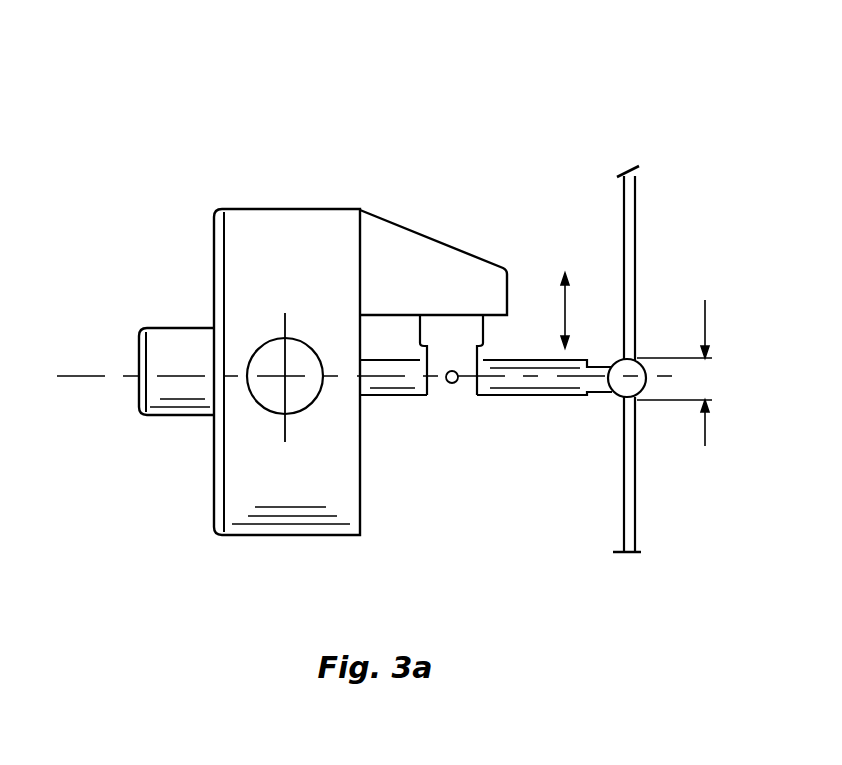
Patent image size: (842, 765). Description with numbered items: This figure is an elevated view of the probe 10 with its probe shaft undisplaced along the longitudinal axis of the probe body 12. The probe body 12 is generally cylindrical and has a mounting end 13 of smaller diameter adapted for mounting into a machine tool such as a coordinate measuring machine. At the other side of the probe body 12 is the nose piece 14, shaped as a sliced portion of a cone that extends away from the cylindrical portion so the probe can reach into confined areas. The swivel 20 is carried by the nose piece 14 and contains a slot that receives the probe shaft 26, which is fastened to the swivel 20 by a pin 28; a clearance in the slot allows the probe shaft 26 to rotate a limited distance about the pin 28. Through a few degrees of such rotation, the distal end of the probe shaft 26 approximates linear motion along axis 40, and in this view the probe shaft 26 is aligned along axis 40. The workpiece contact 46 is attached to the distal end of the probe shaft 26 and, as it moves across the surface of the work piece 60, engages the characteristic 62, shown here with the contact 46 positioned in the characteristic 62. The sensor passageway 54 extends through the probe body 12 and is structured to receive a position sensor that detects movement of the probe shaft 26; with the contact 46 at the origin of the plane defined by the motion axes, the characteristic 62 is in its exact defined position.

The probe 10 is at (602, 65).
The probe body 12 is at (264, 209).
The mounting end 13 is at (170, 328).
The nose piece 14 is at (391, 222).
The swivel 20 is at (485, 331).
The probe shaft 26 is at (525, 397).
The pin 28 is at (449, 384).
The axis 40 is at (567, 305).
The workpiece contact 46 is at (617, 398).
The sensor passageway 54 is at (262, 392).
The work piece 60 is at (636, 202).
The characteristic 62 is at (677, 372).